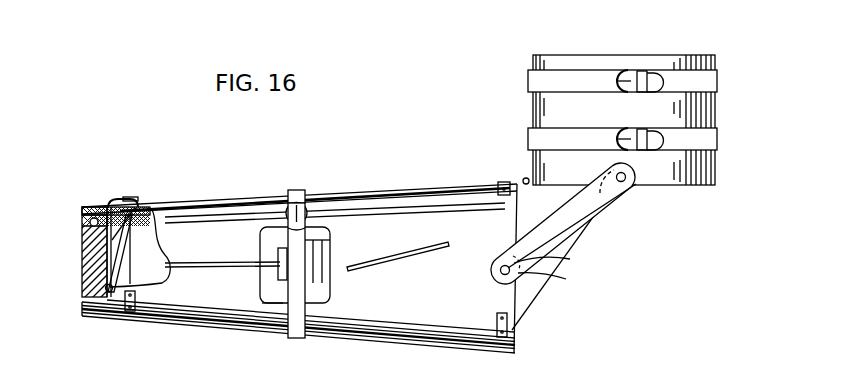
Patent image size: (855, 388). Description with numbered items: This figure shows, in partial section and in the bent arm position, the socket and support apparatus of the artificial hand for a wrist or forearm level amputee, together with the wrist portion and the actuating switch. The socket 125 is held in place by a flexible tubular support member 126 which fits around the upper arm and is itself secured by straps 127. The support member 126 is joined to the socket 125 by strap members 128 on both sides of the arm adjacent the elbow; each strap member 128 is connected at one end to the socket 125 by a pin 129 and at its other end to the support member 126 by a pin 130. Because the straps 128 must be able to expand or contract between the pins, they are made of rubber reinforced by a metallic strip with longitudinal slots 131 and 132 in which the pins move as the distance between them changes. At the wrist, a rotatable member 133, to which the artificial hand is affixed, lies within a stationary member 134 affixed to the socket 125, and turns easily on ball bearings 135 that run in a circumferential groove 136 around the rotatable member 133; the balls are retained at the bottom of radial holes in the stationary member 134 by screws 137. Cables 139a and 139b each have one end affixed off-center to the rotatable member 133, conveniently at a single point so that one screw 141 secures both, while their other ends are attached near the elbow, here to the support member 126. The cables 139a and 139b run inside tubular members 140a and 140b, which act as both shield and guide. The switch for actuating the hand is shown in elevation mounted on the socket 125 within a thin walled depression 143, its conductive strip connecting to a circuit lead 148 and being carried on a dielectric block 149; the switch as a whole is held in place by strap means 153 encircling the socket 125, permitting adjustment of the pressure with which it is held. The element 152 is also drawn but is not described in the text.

The socket 125 is at (237, 220).
The flexible tubular support member 126 is at (558, 110).
The straps 127 is at (538, 78).
The strap member 128 is at (573, 226).
The pin 129 is at (566, 279).
The pin 130 is at (627, 180).
The longitudinal slot 131 is at (570, 260).
The longitudinal slot 132 is at (609, 188).
The rotatable member 133 is at (90, 252).
The stationary member 134 is at (104, 206).
The ball bearings 135 is at (88, 210).
The circumferential groove 136 is at (88, 225).
The screws 137 is at (93, 206).
The cable 139a is at (138, 206).
The cable 139b is at (91, 316).
The tubular member 140a is at (247, 193).
The tubular member 140b is at (203, 325).
The screw 141 is at (92, 289).
The thin walled depression 143 is at (273, 293).
The circuit lead 148 is at (417, 254).
The dielectric block 149 is at (311, 273).
The rod 152 is at (187, 258).
The strap means 153 is at (291, 340).